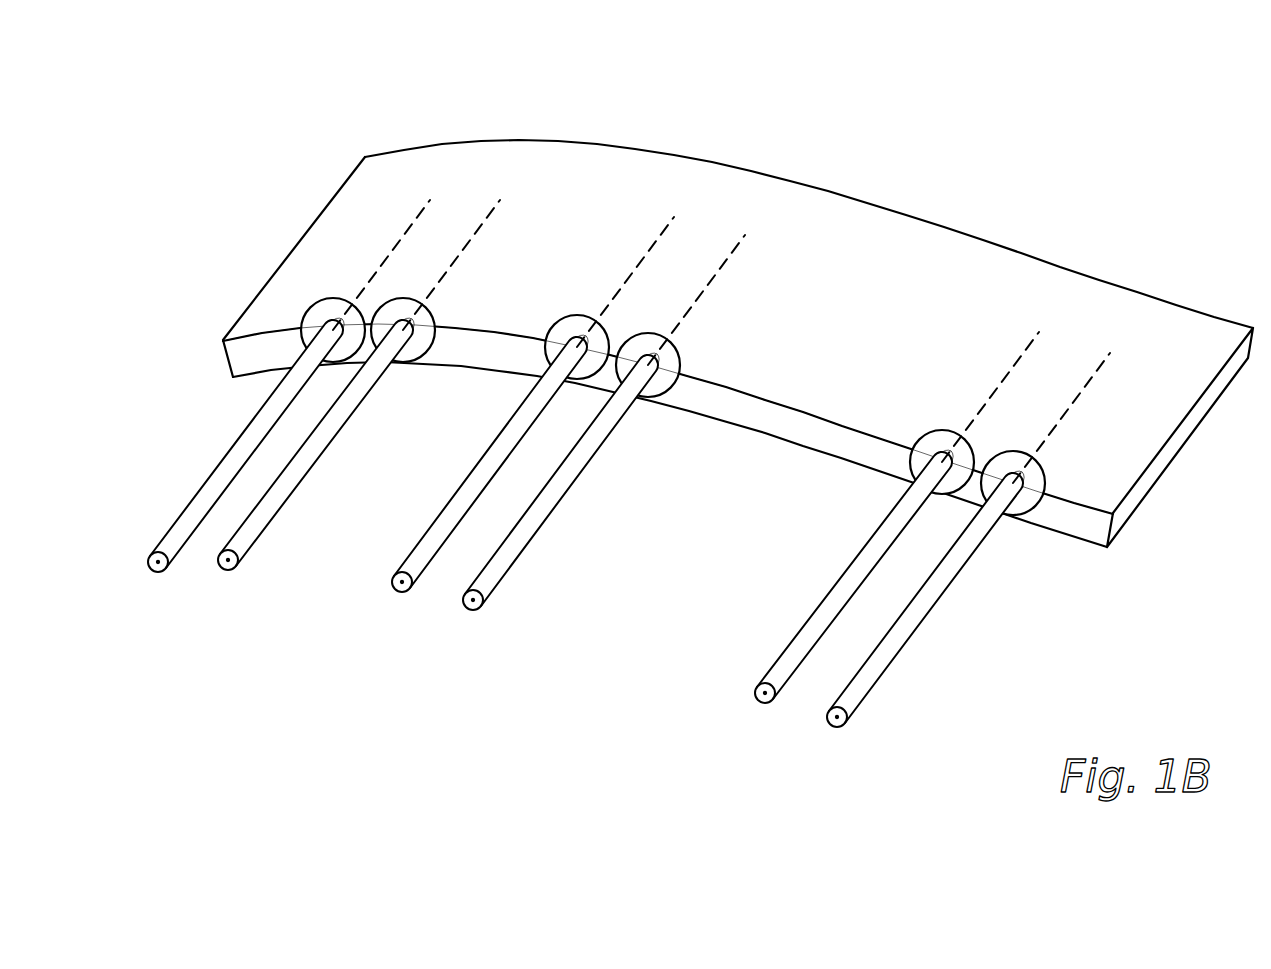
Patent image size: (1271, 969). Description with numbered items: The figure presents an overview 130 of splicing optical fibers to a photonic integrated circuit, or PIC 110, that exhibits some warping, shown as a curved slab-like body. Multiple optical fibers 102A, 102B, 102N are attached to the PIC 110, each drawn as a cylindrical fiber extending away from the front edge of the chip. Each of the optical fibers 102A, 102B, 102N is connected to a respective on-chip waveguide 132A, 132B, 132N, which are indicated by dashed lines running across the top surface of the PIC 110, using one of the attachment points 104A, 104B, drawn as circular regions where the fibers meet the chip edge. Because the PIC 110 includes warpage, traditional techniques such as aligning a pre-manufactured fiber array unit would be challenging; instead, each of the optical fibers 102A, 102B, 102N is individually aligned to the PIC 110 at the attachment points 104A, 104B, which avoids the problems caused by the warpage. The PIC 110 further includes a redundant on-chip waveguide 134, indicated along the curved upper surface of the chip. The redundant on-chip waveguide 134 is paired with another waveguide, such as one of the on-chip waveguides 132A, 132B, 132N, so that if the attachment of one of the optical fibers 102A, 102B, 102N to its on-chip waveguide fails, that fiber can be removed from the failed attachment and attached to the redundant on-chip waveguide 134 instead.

The overview 130 is at (683, 405).
The PIC 110 is at (738, 343).
The redundant on-chip waveguide 134 is at (878, 218).
The on-chip waveguide 132N is at (418, 220).
The on-chip waveguide 132B is at (1025, 352).
The on-chip waveguide 132A is at (1096, 377).
The attachment point 104B is at (965, 452).
The attachment point 104A is at (1037, 476).
The optical fiber 102N is at (160, 573).
The optical fiber 102B is at (762, 704).
The optical fiber 102A is at (835, 728).